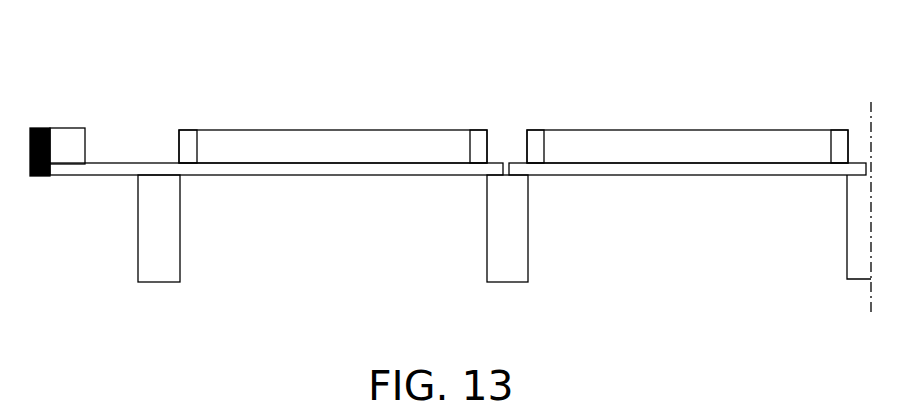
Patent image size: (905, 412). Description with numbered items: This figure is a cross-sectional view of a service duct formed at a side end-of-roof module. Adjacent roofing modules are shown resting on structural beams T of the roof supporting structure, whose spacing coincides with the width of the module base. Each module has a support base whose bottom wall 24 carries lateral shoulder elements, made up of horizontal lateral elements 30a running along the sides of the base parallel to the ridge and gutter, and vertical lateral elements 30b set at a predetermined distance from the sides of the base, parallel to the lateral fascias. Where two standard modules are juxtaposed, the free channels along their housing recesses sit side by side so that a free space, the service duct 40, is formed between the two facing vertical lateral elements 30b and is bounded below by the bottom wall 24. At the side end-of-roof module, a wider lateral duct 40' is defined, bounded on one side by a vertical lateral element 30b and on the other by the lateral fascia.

The bottom wall 24 is at (377, 170).
The horizontal lateral element 30a is at (270, 152).
The vertical lateral element 30b is at (188, 146).
The service duct 40 is at (684, 98).
The lateral duct 40' is at (276, 109).
The structural beam T is at (167, 262).